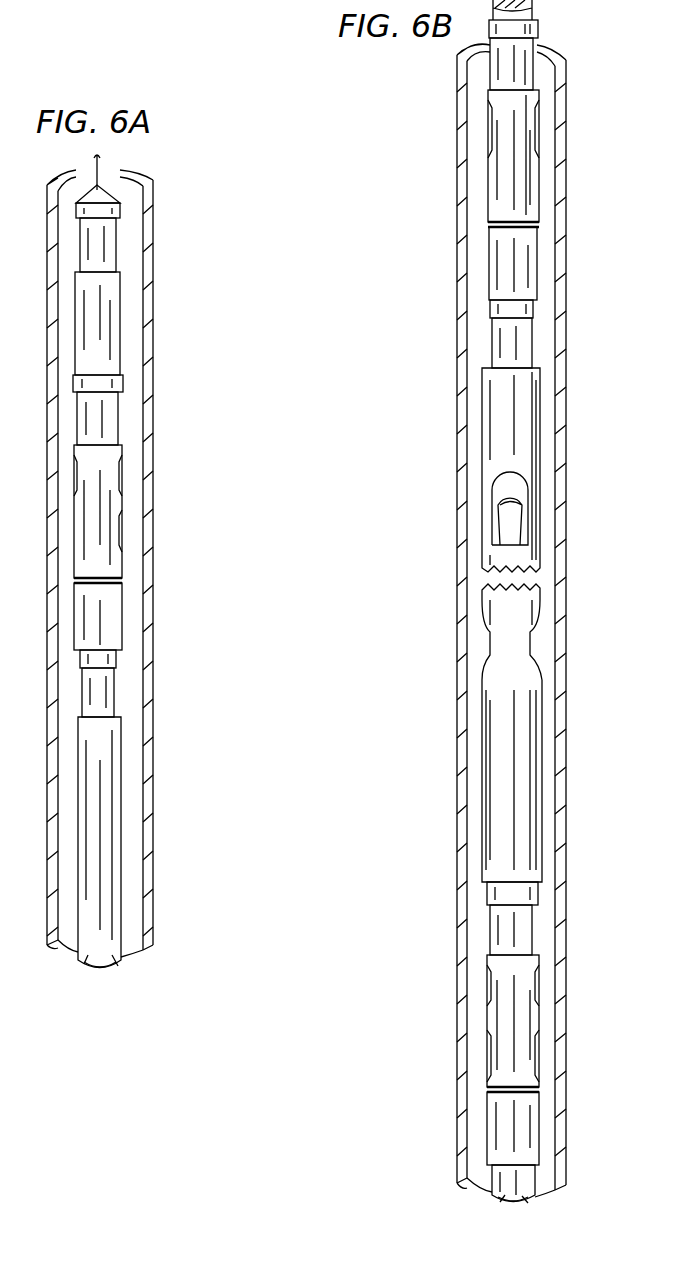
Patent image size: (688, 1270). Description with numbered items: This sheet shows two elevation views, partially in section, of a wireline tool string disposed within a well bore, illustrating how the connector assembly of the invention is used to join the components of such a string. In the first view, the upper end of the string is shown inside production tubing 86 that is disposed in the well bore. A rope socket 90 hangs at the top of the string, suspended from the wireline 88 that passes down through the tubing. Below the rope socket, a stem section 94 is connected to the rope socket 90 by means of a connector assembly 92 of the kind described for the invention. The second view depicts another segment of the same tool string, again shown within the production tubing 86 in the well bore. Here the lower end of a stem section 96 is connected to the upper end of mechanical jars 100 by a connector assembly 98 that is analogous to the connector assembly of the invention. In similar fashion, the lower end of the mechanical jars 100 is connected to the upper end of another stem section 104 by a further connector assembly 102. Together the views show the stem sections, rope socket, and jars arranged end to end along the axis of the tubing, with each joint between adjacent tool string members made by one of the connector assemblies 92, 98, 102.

In FIG. 6A, the production tubing 86 is at (153, 343).
In FIG. 6B, the production tubing 86 is at (566, 275).
In FIG. 6A, the wireline 88 is at (103, 173).
In FIG. 6A, the rope socket 90 is at (118, 292).
In FIG. 6A, the connector assembly 92 is at (122, 538).
In FIG. 6A, the stem section 94 is at (120, 808).
In FIG. 6B, the stem section 96 is at (537, 8).
In FIG. 6B, the connector assembly 98 is at (530, 182).
In FIG. 6B, the mechanical jars 100 is at (535, 432).
In FIG. 6B, the connector assembly 102 is at (548, 1052).
In FIG. 6B, the stem section 104 is at (540, 1186).